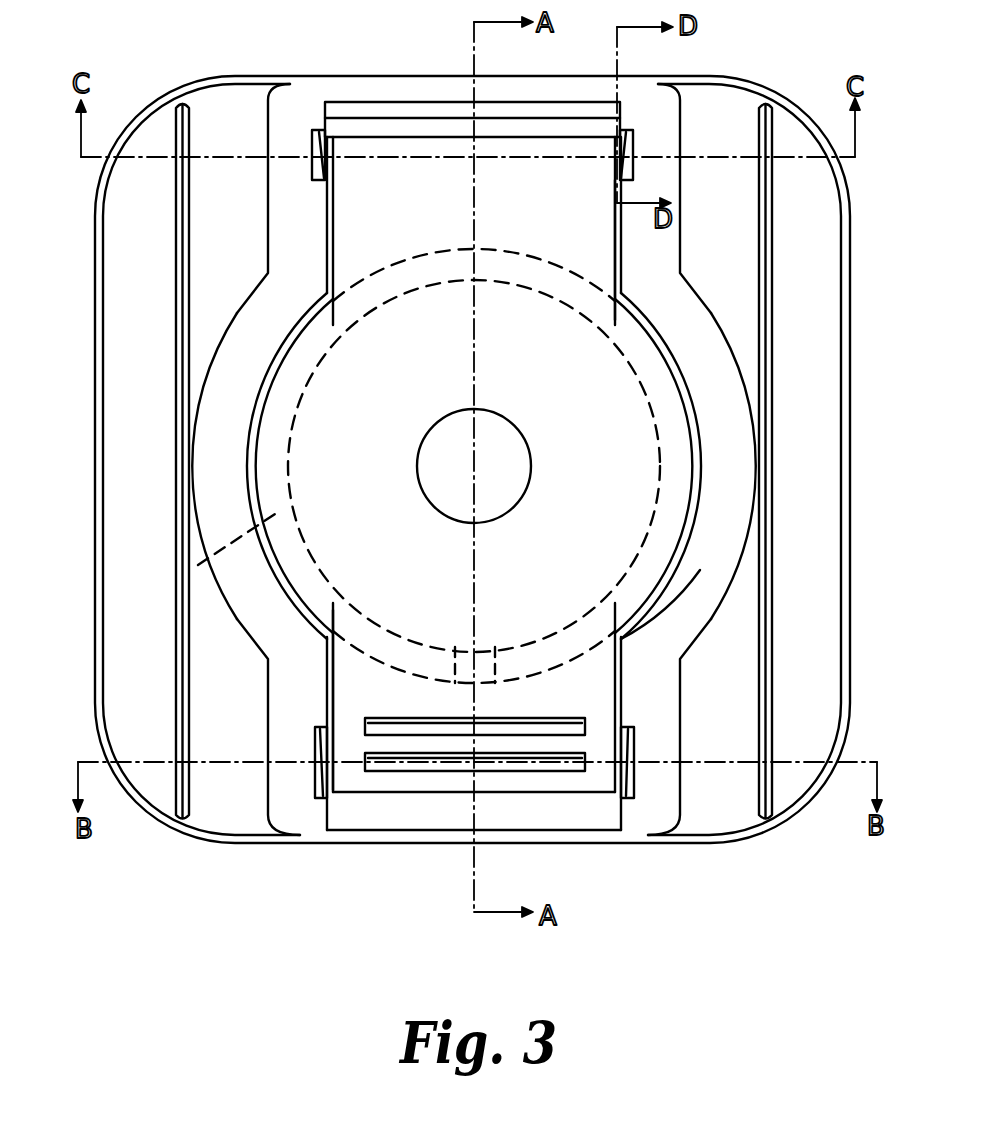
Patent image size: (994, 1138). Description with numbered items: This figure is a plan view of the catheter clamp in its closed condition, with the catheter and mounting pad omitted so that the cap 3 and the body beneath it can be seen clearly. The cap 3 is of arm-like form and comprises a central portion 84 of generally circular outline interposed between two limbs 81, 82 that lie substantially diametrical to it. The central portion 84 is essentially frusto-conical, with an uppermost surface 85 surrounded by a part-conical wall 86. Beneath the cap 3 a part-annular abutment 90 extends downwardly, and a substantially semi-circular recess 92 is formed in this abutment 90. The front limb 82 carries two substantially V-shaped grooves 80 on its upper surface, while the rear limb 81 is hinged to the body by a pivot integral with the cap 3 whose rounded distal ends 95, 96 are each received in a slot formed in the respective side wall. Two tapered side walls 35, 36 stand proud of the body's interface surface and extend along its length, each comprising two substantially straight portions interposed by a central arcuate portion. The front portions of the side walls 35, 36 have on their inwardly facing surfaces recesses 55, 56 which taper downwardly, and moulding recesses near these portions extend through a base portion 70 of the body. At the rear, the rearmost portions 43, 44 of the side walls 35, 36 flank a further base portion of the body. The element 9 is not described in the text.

The cap 3 is at (385, 200).
The cam disc 9 is at (685, 467).
The side wall 35 is at (236, 313).
The side wall 36 is at (715, 312).
The rearmost portion of side wall 43 is at (295, 222).
The rearmost portion of side wall 44 is at (655, 183).
The recess 55 is at (324, 798).
The recess 56 is at (634, 782).
The base portion 70 is at (425, 812).
The V-shaped grooves 80 is at (588, 722).
The limb 81 is at (587, 252).
The front limb 82 is at (387, 685).
The central portion 84 is at (305, 428).
The uppermost surface 85 is at (488, 455).
The part-conical wall 86 is at (618, 526).
The abutment 90 is at (196, 563).
The recess 92 is at (505, 686).
The pivot end 95 is at (290, 88).
The pivot end 96 is at (648, 136).